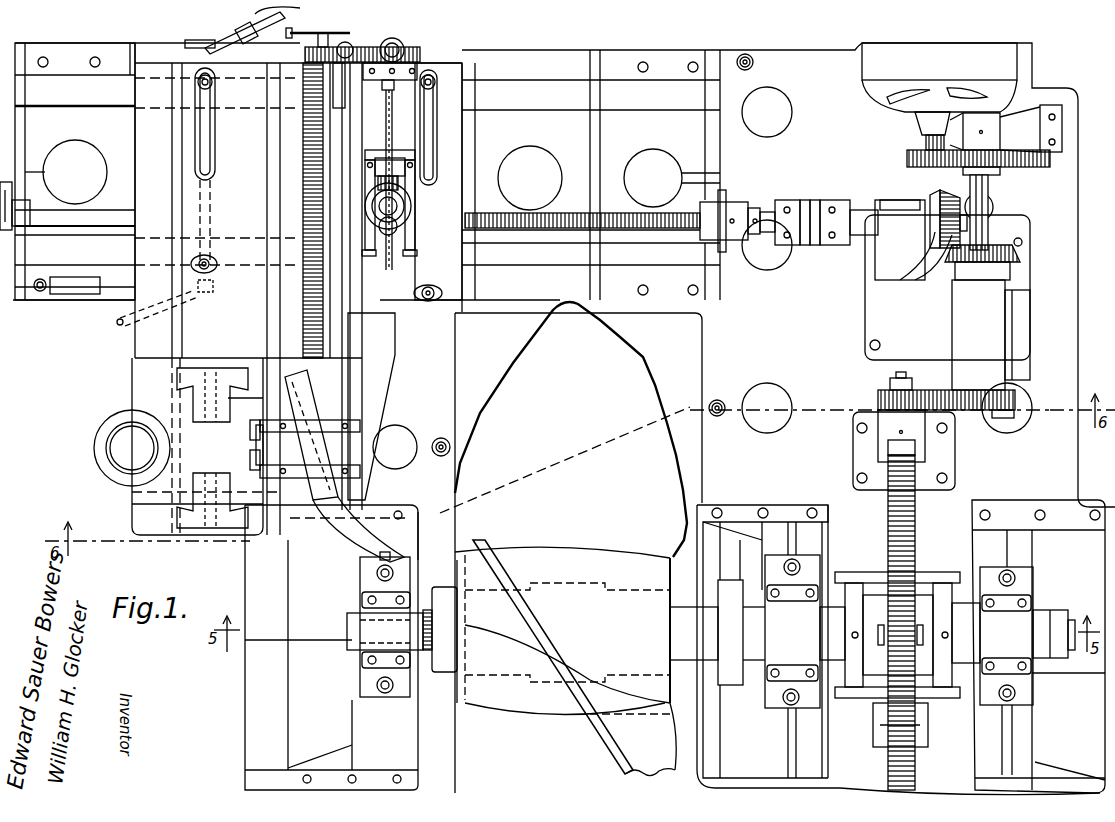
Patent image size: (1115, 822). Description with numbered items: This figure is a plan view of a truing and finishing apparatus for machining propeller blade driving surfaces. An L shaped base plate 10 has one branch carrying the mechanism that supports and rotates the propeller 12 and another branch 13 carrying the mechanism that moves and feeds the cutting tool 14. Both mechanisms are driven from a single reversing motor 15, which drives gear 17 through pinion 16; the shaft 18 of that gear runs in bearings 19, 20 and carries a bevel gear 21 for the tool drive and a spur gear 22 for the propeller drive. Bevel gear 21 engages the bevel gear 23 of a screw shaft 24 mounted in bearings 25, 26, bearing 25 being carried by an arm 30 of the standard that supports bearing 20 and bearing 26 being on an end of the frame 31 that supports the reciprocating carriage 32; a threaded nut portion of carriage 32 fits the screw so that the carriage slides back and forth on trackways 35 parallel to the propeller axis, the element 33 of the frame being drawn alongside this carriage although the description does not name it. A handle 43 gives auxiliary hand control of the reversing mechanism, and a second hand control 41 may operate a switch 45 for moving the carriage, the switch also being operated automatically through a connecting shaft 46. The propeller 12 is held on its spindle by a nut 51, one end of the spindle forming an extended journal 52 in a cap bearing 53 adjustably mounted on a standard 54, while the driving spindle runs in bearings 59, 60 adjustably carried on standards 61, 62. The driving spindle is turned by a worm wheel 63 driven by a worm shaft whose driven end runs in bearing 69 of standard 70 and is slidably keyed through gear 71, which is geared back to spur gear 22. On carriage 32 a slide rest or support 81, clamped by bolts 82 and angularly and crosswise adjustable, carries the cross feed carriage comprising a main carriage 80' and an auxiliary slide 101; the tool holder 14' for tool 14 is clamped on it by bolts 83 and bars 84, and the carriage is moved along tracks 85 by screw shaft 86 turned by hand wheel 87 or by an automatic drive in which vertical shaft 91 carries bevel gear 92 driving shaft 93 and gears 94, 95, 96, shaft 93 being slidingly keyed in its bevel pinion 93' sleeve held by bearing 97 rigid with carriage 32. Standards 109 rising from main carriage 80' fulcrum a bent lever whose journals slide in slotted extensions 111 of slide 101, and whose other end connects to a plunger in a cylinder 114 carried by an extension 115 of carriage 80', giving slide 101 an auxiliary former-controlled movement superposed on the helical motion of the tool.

The L shaped base plate 10 is at (1050, 270).
The propeller 12 is at (612, 383).
The branch 13 is at (438, 62).
The cutting tool 14 is at (344, 529).
The tool holder 14' is at (360, 421).
The motor 15 is at (990, 60).
The pinion 16 is at (924, 142).
The gear 17 is at (1040, 167).
The shaft 18 is at (988, 207).
The bearing 19 is at (985, 132).
The bearing 20 is at (985, 322).
The bevel gear 21 is at (1015, 255).
The spur gear 22 is at (1015, 400).
The bevel gear 23 is at (940, 192).
The screw shaft 24 is at (648, 212).
The bearing 25 is at (876, 204).
The bearing 26 is at (732, 242).
The arm 30 is at (910, 285).
The frame 31 is at (106, 51).
The reciprocating carriage 32 is at (460, 62).
The beam 33 is at (591, 175).
The trackways 35 is at (705, 634).
The second hand control 41 is at (277, 24).
The handle 43 is at (118, 320).
The switch 45 is at (205, 44).
The connecting shaft 46 is at (200, 205).
The nut 51 is at (444, 664).
The extended journal 52 is at (352, 640).
The cap bearing 53 is at (385, 627).
The standard 54 is at (300, 578).
The bearing 59 is at (805, 615).
The bearing 60 is at (955, 652).
The standard 61 is at (775, 696).
The standard 62 is at (1055, 762).
The worm wheel 63 is at (888, 526).
The bearing 69 is at (920, 445).
The standard 70 is at (944, 483).
The gear 71 is at (878, 398).
The main carriage 80' is at (190, 446).
The slide rest or support 81 is at (448, 70).
The bolts 82 is at (198, 86).
The bolts 83 is at (286, 430).
The bars 84 is at (348, 470).
The tracks 85 is at (285, 320).
The screw shaft 86 is at (303, 205).
The hand wheel 87 is at (350, 33).
The vertical shaft 91 is at (412, 206).
The bevel gear 92 is at (398, 230).
The shaft 93 is at (390, 166).
The bevel pinion 93' is at (420, 179).
The gear 94 is at (398, 45).
The gear 95 is at (370, 52).
The gear 96 is at (343, 75).
The bearing 97 is at (410, 155).
The auxiliary slide 101 is at (330, 398).
The standards 109 is at (212, 390).
The extensions 111 is at (242, 418).
The cylinder 114 is at (112, 468).
The extension 115 is at (122, 478).